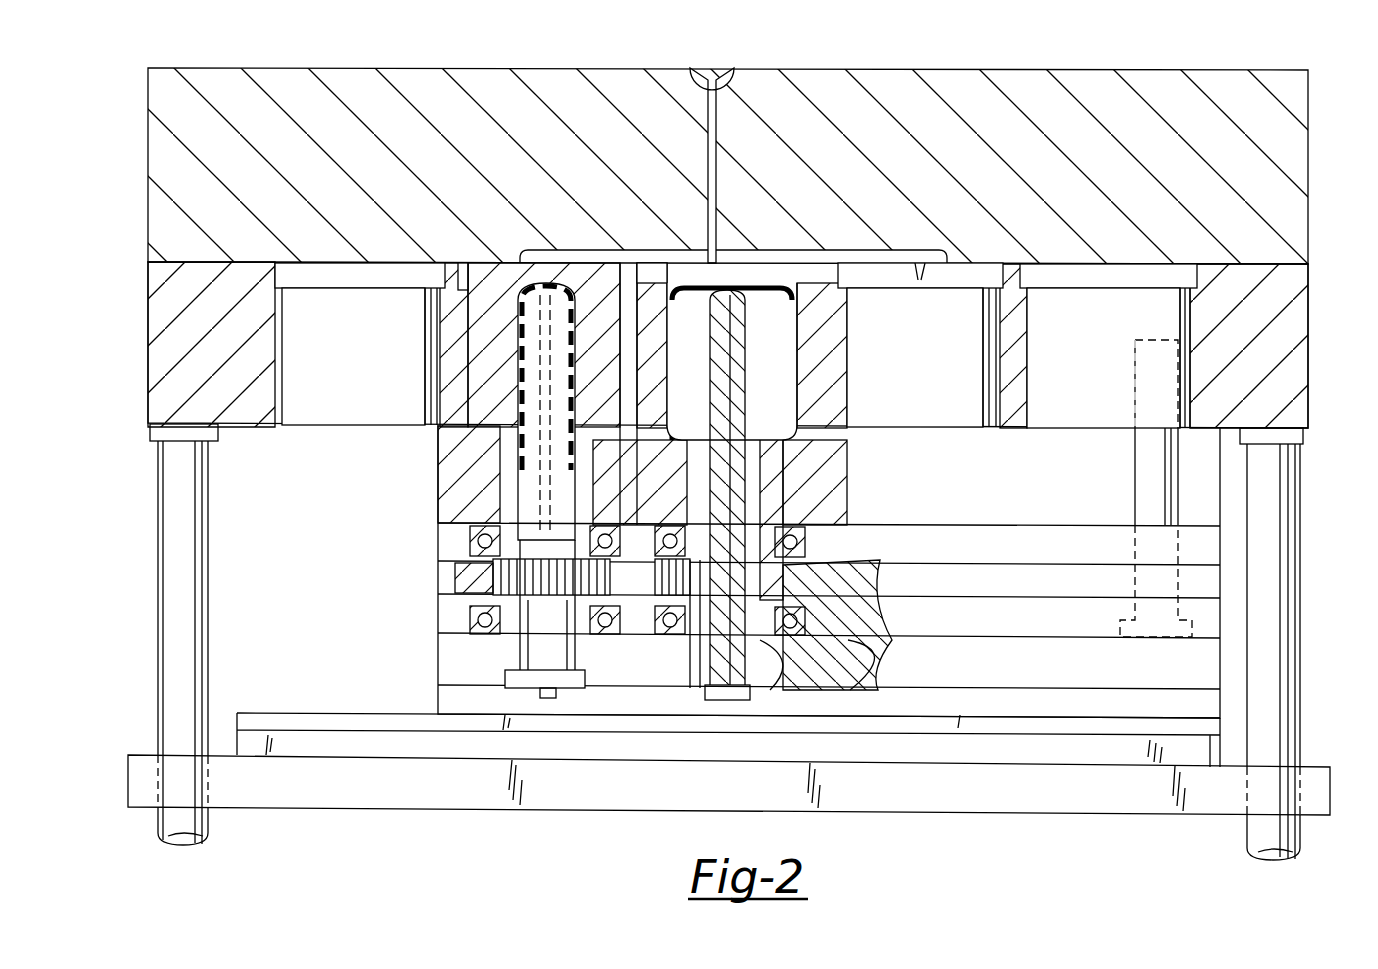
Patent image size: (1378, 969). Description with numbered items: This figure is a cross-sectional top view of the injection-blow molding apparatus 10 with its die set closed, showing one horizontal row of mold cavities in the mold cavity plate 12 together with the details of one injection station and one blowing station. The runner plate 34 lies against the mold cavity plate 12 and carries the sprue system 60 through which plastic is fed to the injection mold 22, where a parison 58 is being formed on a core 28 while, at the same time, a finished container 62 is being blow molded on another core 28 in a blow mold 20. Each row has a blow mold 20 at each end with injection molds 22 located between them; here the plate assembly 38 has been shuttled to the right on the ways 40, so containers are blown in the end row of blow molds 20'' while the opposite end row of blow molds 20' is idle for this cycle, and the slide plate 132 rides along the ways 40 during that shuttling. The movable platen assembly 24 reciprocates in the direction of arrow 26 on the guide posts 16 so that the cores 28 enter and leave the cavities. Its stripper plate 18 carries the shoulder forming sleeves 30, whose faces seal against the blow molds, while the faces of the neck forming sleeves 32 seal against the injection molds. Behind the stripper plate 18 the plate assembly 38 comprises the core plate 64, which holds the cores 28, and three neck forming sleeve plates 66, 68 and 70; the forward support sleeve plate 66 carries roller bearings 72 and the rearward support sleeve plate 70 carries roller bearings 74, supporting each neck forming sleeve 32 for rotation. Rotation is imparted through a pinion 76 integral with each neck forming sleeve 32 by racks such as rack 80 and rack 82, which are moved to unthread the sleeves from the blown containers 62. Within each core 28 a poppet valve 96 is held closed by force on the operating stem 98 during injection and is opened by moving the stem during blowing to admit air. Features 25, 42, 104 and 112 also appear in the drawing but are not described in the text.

The injection-blow molding apparatus 10 is at (1322, 375).
The mold cavity plate 12 is at (1270, 378).
The guide posts 16 is at (172, 583).
The stripper plate 18 is at (845, 450).
The blow mold 20 is at (906, 316).
The end vertical row of blow molds 20' is at (360, 344).
The end vertical row of blow molds 20'' is at (1108, 346).
The injection mold 22 is at (472, 263).
The movable platen assembly 24 is at (150, 478).
The clamp plate 25 is at (942, 795).
The arrow 26 is at (111, 749).
The core 28 is at (578, 635).
The shoulder forming sleeve 30 is at (475, 449).
The neck forming sleeve 32 is at (505, 497).
The runner plate 34 is at (1310, 152).
The plate assembly 38 is at (415, 523).
The ways 40 is at (1075, 730).
The return pin 42 is at (1140, 465).
The parison 58 is at (525, 290).
The sprue system 60 is at (717, 190).
The finished container 62 is at (800, 355).
The core plate 64 is at (1145, 673).
The forward support sleeve plate 66 is at (1210, 561).
The neck forming sleeve plate 68 is at (1110, 595).
The rearward support sleeve plate 70 is at (1072, 630).
The roller bearings 72 is at (470, 532).
The roller bearings 74 is at (470, 625).
The pinion 76 is at (545, 600).
The rack 80 is at (470, 572).
The rack 82 is at (668, 592).
The poppet valve 96 is at (560, 285).
The operating stem 98 is at (718, 695).
The molded cap 104 is at (690, 295).
The parting line 112 is at (135, 292).
The slide plate 132 is at (1155, 713).